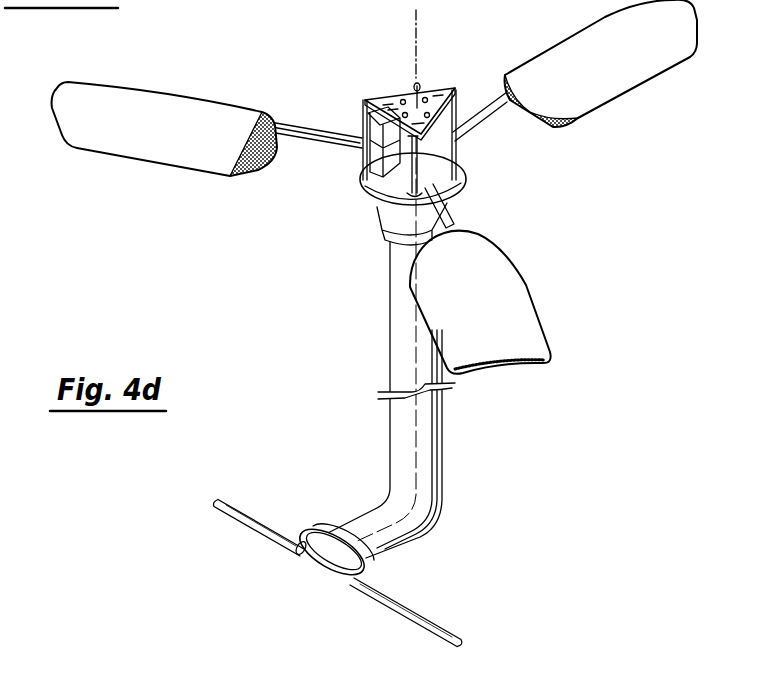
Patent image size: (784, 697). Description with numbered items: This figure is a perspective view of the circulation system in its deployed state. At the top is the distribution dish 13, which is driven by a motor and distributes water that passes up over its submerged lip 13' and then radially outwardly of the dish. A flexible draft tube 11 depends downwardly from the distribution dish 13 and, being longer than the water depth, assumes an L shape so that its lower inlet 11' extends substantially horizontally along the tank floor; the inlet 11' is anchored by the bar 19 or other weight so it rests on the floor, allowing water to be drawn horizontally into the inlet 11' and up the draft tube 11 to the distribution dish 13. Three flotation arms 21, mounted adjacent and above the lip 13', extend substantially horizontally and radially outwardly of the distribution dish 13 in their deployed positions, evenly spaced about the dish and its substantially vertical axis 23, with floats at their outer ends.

The draft tube 11 is at (374, 347).
The inlet 11' is at (332, 519).
The distribution dish 13 is at (382, 167).
The lip 13' is at (455, 179).
The bar 19 is at (413, 613).
The flotation arms 21 is at (167, 92).
The vertical axis 23 is at (416, 62).